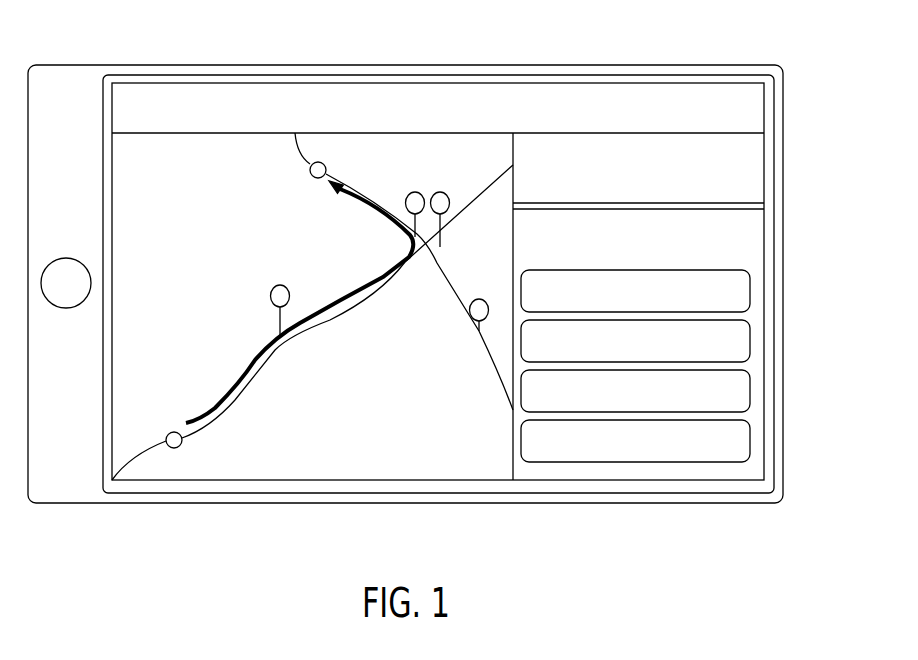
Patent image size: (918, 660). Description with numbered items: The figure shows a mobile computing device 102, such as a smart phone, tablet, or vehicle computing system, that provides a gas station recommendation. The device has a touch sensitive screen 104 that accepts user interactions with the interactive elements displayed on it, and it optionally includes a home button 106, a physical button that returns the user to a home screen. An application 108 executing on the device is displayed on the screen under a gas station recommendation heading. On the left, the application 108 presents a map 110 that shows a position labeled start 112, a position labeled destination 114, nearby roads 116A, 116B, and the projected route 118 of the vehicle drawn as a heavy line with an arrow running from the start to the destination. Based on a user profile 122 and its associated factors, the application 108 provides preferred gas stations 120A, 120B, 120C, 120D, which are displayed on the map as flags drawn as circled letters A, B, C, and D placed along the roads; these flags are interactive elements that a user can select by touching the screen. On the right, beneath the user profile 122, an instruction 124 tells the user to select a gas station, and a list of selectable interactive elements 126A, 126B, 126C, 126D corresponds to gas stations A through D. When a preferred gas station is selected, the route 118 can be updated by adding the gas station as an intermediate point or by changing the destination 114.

The mobile computing device 102 is at (528, 65).
The touch sensitive screen 104 is at (596, 80).
The home button 106 is at (66, 272).
The application 108 is at (226, 90).
The map 110 is at (351, 463).
The start 112 is at (175, 448).
The destination 114 is at (311, 175).
The road 116A is at (262, 368).
The road 116B is at (493, 382).
The projected route 118 is at (322, 310).
The preferred gas station 120A is at (482, 300).
The preferred gas station 120B is at (275, 287).
The preferred gas station 120C is at (410, 194).
The preferred gas station 120D is at (444, 194).
The user profile 122 is at (712, 168).
The instruction 124 is at (731, 242).
The selectable interactive element 126A is at (750, 290).
The selectable interactive element 126B is at (750, 340).
The selectable interactive element 126C is at (750, 390).
The selectable interactive element 126D is at (750, 440).